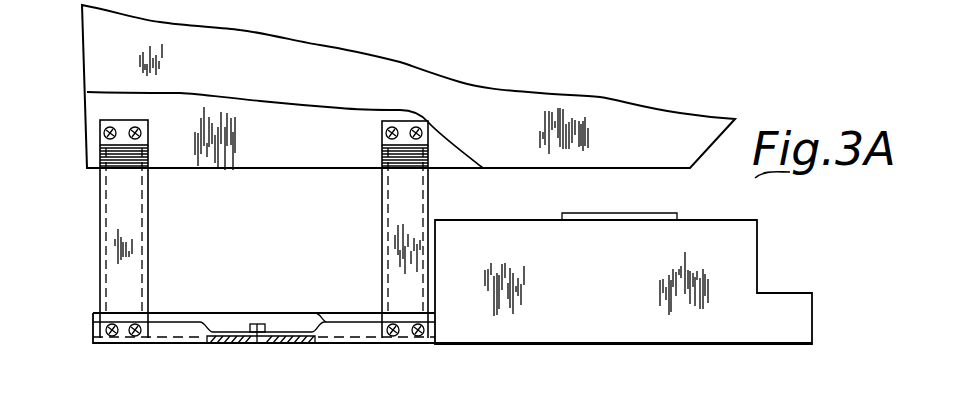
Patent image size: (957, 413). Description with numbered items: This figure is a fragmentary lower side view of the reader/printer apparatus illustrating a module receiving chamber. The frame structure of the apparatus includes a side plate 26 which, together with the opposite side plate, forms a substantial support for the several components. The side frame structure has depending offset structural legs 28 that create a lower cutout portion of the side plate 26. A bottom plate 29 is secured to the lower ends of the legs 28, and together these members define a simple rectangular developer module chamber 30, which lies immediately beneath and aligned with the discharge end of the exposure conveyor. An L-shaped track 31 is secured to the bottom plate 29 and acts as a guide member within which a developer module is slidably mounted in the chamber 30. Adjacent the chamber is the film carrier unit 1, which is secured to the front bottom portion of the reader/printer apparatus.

The film carrier unit 1 is at (757, 216).
The side plate 26 is at (187, 168).
The structural leg 28 is at (112, 214).
The bottom plate 29 is at (242, 343).
The developer module chamber 30 is at (250, 267).
The L-shaped track 31 is at (328, 318).